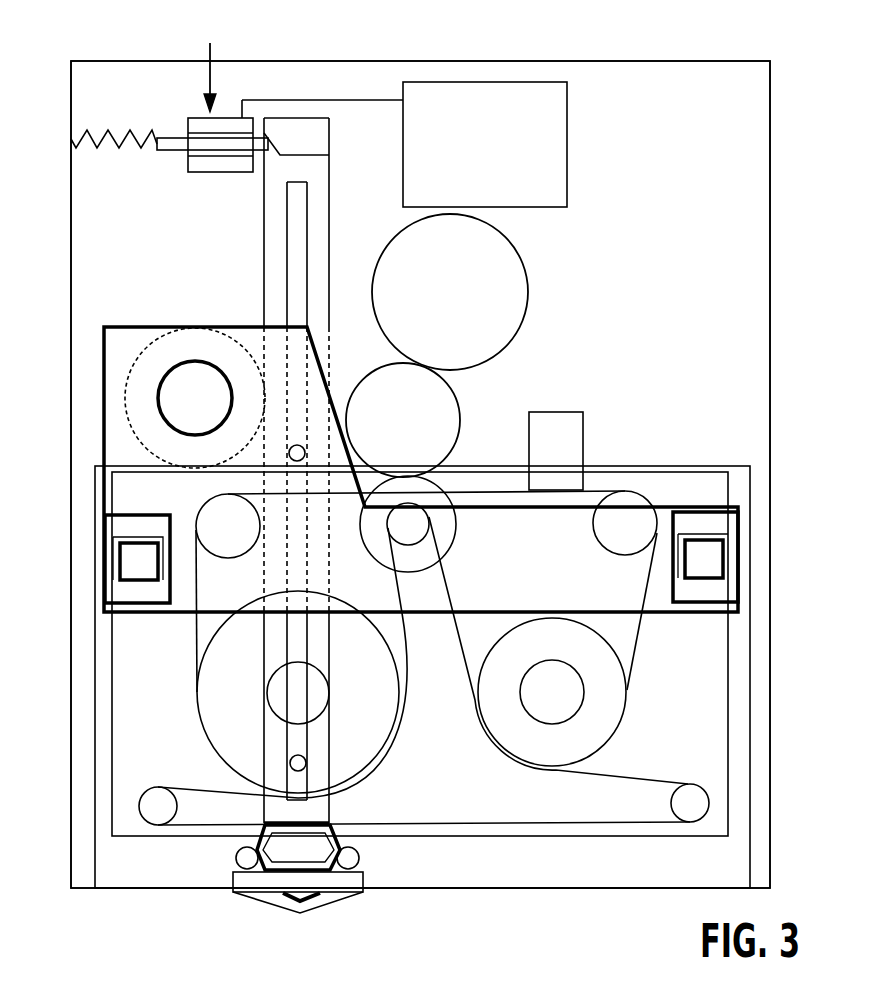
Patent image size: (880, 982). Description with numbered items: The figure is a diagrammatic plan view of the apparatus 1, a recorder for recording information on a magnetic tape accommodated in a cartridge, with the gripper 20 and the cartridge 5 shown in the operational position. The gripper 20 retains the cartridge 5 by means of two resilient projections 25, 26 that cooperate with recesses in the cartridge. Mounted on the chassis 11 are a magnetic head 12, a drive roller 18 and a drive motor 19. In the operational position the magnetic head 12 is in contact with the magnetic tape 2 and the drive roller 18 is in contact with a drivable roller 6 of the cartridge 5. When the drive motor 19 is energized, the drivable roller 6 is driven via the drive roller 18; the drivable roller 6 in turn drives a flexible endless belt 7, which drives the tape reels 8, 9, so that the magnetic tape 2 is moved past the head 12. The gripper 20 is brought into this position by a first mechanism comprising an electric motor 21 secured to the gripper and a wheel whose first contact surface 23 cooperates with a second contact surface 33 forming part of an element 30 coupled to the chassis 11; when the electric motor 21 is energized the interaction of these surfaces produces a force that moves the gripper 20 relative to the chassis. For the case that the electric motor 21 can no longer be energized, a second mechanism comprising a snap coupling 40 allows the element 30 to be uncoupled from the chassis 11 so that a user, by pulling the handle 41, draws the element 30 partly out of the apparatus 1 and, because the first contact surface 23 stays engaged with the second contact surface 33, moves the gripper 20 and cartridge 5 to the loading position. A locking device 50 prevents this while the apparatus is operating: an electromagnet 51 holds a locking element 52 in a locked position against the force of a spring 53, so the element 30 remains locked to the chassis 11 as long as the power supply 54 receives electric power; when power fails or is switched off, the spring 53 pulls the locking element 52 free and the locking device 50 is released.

The apparatus 1 is at (70, 328).
The magnetic tape 2 is at (515, 493).
The cartridge 5 is at (577, 837).
The drivable roller 6 is at (460, 523).
The flexible endless belt 7 is at (450, 588).
The tape reel 8 is at (372, 713).
The tape reel 9 is at (610, 713).
The chassis 11 is at (770, 148).
The magnetic head 12 is at (585, 417).
The drive roller 18 is at (463, 418).
The drive motor 19 is at (530, 293).
The gripper 20 is at (162, 615).
The electric motor 21 is at (195, 360).
The first contact surface 23 is at (140, 357).
The resilient projection 25 is at (132, 567).
The resilient projection 26 is at (695, 565).
The element 30 is at (312, 177).
The second contact surface 33 is at (264, 238).
The snap coupling 40 is at (357, 857).
The handle 41 is at (337, 897).
The locking device 50 is at (223, 35).
The electromagnet 51 is at (217, 172).
The locking element 52 is at (167, 150).
The spring 53 is at (97, 152).
The power supply 54 is at (496, 152).